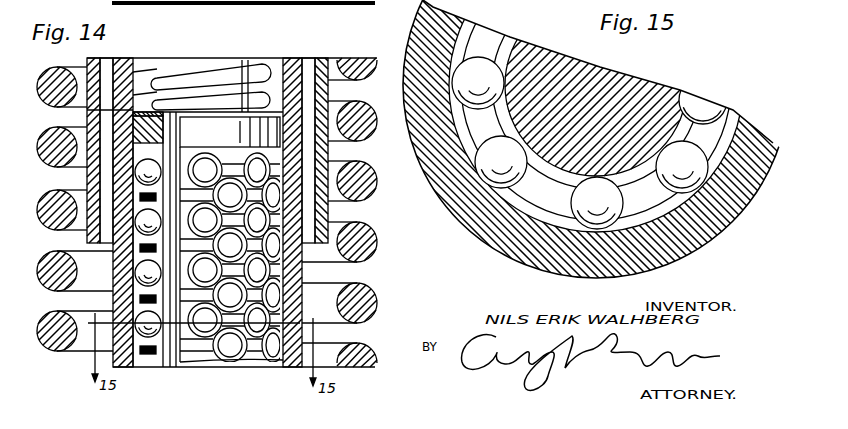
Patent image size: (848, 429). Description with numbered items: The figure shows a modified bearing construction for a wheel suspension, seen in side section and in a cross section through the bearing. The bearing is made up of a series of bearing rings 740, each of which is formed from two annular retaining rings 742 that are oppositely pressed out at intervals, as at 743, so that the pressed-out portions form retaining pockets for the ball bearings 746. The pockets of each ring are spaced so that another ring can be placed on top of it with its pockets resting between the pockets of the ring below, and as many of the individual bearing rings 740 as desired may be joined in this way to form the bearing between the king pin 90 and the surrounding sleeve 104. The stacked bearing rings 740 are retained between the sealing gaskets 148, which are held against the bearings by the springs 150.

In FIG. 14, the king pin 90 is at (231, 59).
In FIG. 15, the king pin 90 is at (586, 126).
In FIG. 14, the sleeve 104 is at (87, 114).
In FIG. 15, the sleeve 104 is at (530, 264).
In FIG. 14, the sealing gaskets 148 is at (135, 138).
In FIG. 14, the springs 150 is at (188, 57).
In FIG. 14, the bearing rings 740 is at (313, 147).
In FIG. 15, the bearing rings 740 is at (487, 41).
In FIG. 14, the annular retaining rings 742 is at (143, 237).
In FIG. 15, the annular retaining rings 742 is at (648, 212).
In FIG. 14, the pressed-out portions 743 is at (112, 290).
In FIG. 15, the pressed-out portions 743 is at (478, 83).
In FIG. 14, the ball bearings 746 is at (298, 272).
In FIG. 15, the ball bearings 746 is at (518, 169).